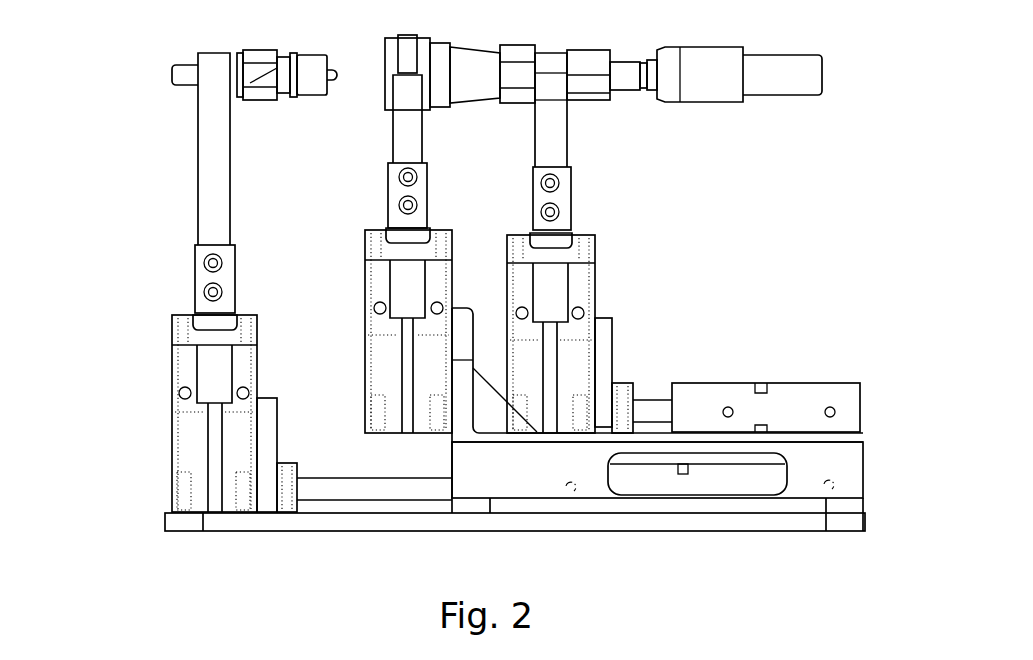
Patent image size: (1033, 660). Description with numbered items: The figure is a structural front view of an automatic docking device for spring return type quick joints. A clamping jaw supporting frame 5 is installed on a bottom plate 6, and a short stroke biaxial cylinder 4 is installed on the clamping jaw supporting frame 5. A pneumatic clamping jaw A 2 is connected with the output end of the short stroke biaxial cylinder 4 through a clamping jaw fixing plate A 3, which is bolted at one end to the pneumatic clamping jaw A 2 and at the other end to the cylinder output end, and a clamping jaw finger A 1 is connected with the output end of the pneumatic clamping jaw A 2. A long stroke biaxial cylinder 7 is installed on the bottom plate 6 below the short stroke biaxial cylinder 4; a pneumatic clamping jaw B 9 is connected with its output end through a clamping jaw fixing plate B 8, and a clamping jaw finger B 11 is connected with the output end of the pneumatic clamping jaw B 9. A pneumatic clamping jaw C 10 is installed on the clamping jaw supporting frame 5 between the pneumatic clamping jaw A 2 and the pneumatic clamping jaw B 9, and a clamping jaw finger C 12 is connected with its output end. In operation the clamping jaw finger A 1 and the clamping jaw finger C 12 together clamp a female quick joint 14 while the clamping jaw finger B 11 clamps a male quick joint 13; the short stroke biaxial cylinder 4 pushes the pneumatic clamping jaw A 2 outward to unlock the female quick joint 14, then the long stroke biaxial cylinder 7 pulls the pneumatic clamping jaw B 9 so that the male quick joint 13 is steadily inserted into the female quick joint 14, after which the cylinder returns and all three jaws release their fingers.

The clamping jaw finger A 1 is at (552, 138).
The pneumatic clamping jaw A 2 is at (578, 295).
The clamping jaw fixing plate A 3 is at (603, 367).
The short stroke biaxial cylinder 4 is at (767, 407).
The clamping jaw supporting frame 5 is at (699, 491).
The bottom plate 6 is at (750, 523).
The long stroke biaxial cylinder 7 is at (627, 485).
The clamping jaw fixing plate B 8 is at (266, 465).
The pneumatic clamping jaw B 9 is at (192, 436).
The pneumatic clamping jaw C 10 is at (380, 352).
The clamping jaw finger B 11 is at (215, 237).
The clamping jaw finger C 12 is at (408, 118).
The male quick joint 13 is at (237, 93).
The female quick joint 14 is at (440, 67).